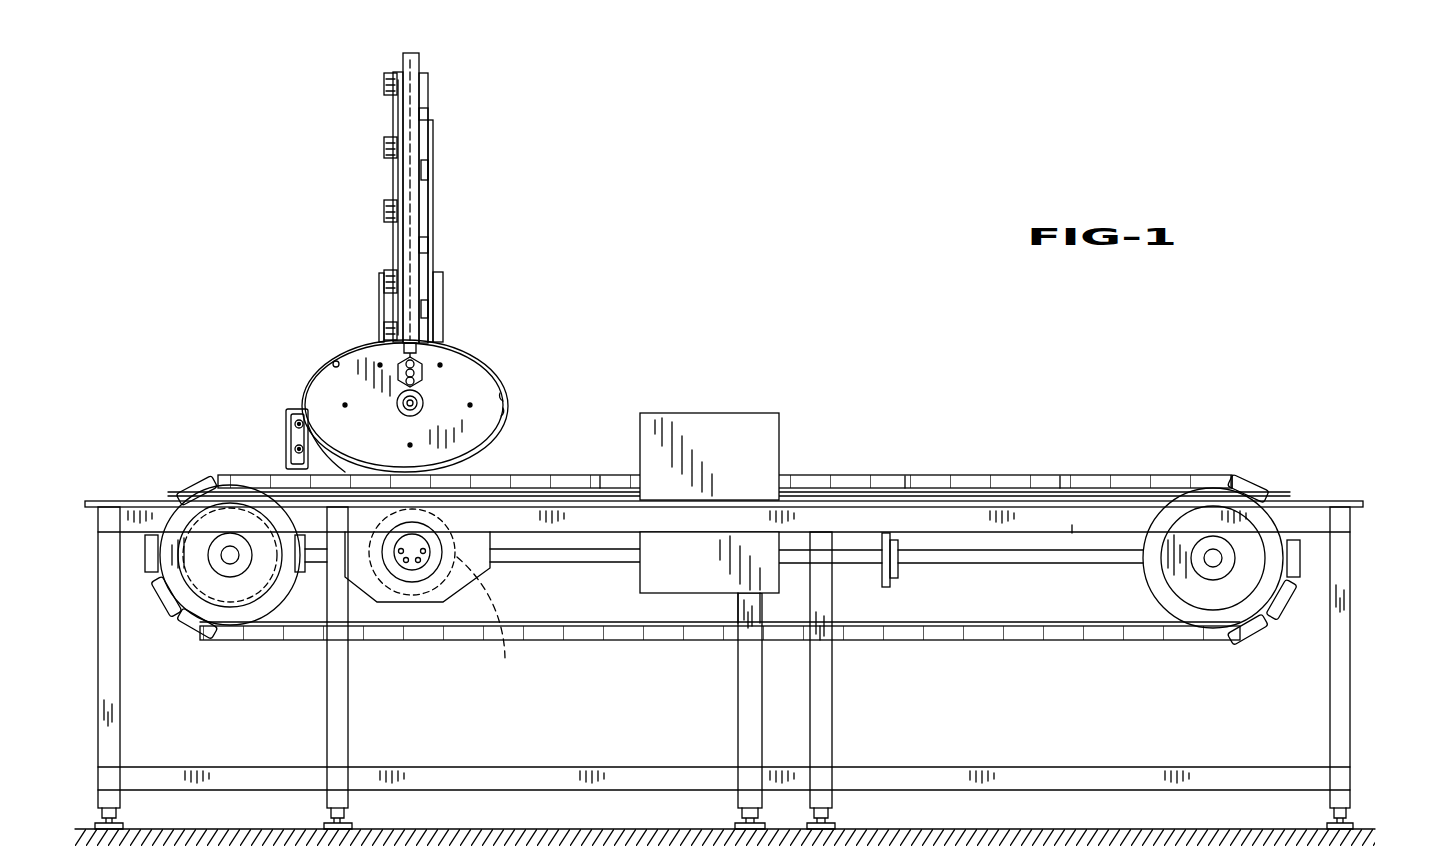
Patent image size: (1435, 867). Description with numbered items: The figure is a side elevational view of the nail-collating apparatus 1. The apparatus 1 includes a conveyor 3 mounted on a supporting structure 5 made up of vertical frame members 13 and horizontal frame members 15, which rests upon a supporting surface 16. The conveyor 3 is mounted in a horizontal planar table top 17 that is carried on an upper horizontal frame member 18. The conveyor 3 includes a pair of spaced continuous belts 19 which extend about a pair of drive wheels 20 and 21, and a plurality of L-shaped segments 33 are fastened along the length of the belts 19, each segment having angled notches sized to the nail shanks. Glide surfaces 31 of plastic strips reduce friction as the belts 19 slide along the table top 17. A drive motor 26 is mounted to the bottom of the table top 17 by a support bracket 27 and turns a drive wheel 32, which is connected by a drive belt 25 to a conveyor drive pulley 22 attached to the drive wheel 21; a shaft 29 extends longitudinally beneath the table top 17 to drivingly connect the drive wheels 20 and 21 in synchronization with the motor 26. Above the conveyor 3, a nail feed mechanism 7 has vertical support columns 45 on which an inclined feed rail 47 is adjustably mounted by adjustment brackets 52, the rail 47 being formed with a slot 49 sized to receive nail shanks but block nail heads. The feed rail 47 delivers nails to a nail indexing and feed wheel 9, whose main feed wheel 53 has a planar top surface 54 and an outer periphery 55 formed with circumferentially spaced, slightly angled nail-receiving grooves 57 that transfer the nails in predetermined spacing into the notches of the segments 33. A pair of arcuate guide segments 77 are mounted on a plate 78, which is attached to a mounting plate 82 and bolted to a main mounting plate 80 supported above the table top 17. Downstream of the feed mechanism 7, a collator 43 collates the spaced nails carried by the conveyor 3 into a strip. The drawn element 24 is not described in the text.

The apparatus 1 is at (752, 266).
The conveyor 3 is at (740, 552).
The supporting structure 5 is at (1362, 664).
The nail feed mechanism 7 is at (419, 198).
The nail indexing and feed wheel 9 is at (386, 318).
The vertical frame members 13 is at (120, 722).
The horizontal frame members 15 is at (626, 775).
The supporting surface 16 is at (120, 500).
The table top 17 is at (1302, 496).
The upper horizontal frame member 18 is at (1072, 525).
The continuous belts 19 is at (860, 492).
The drive wheel 20 is at (1205, 628).
The drive wheel 21 is at (236, 605).
The conveyor drive pulley 22 is at (195, 622).
The drive shaft 24 is at (236, 560).
The drive belt 25 is at (300, 632).
The drive motor 26 is at (412, 560).
The support bracket 27 is at (429, 609).
The shaft 29 is at (540, 563).
The glide surfaces 31 is at (600, 490).
The drive wheel 32 is at (441, 597).
The L-shaped segments 33 is at (1002, 490).
The collator 43 is at (708, 408).
The vertical support columns 45 is at (444, 292).
The feed rail 47 is at (422, 180).
The slot 49 is at (412, 150).
The adjustment brackets 52 is at (392, 113).
The main feed wheel 53 is at (475, 352).
The top surface 54 is at (470, 385).
The outer periphery 55 is at (503, 412).
The nail-receiving grooves 57 is at (503, 408).
The arcuate guide segments 77 is at (340, 366).
The plate 78 is at (322, 392).
The main mounting plate 80 is at (286, 414).
The mounting plate 82 is at (290, 452).